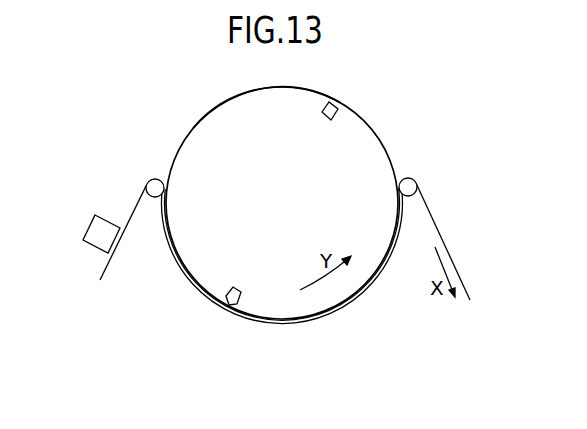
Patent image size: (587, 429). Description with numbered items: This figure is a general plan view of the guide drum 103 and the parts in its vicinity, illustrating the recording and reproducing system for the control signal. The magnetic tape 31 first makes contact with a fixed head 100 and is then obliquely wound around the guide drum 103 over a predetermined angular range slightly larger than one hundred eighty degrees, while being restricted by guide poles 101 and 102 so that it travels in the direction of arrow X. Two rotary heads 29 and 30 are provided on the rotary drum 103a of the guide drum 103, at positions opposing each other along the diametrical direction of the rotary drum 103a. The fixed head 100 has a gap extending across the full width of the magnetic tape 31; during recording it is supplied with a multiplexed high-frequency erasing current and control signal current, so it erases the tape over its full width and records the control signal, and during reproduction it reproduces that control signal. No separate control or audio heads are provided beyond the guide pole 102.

The rotary head 29 is at (226, 292).
The rotary head 30 is at (338, 113).
The magnetic tape 31 is at (441, 229).
The fixed head 100 is at (93, 232).
The guide pole 101 is at (149, 181).
The guide pole 102 is at (405, 179).
The guide drum 103 is at (188, 129).
The rotary drum 103a is at (238, 103).